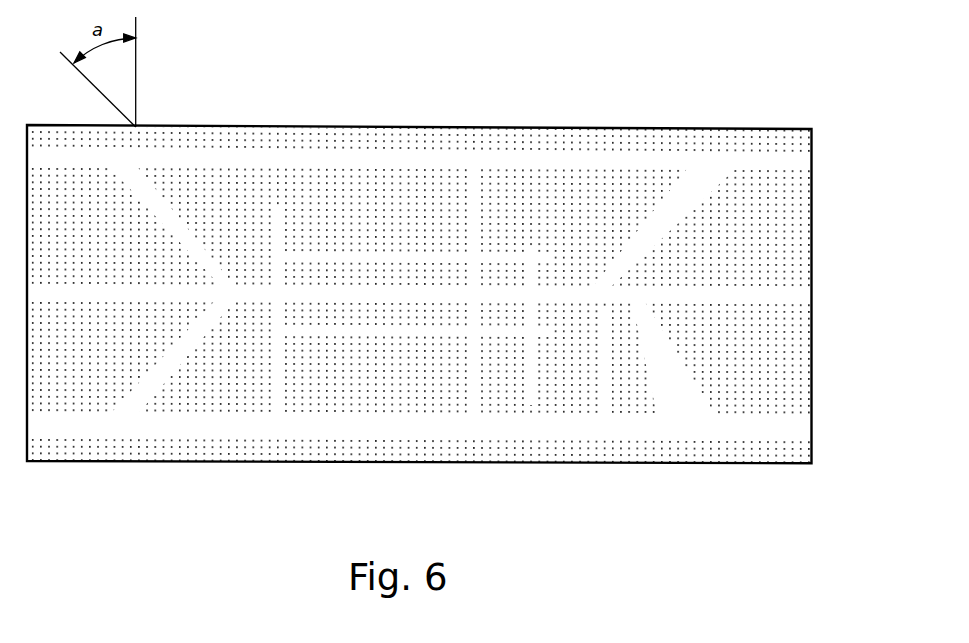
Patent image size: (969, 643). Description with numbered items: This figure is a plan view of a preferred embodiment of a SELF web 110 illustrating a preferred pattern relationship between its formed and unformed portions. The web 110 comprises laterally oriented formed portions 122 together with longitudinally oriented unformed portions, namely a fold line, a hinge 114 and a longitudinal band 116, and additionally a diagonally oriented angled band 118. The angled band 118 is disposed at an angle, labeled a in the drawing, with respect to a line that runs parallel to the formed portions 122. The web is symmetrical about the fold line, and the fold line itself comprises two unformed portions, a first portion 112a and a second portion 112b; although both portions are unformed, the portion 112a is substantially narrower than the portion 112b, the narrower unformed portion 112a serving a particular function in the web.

The SELF web 110 is at (503, 112).
The fold line portion 112a is at (631, 294).
The fold line portion 112b is at (730, 295).
The hinge 114 is at (480, 260).
The longitudinal band 116 is at (355, 160).
The angled band 118 is at (698, 193).
The formed portions 122 is at (768, 252).